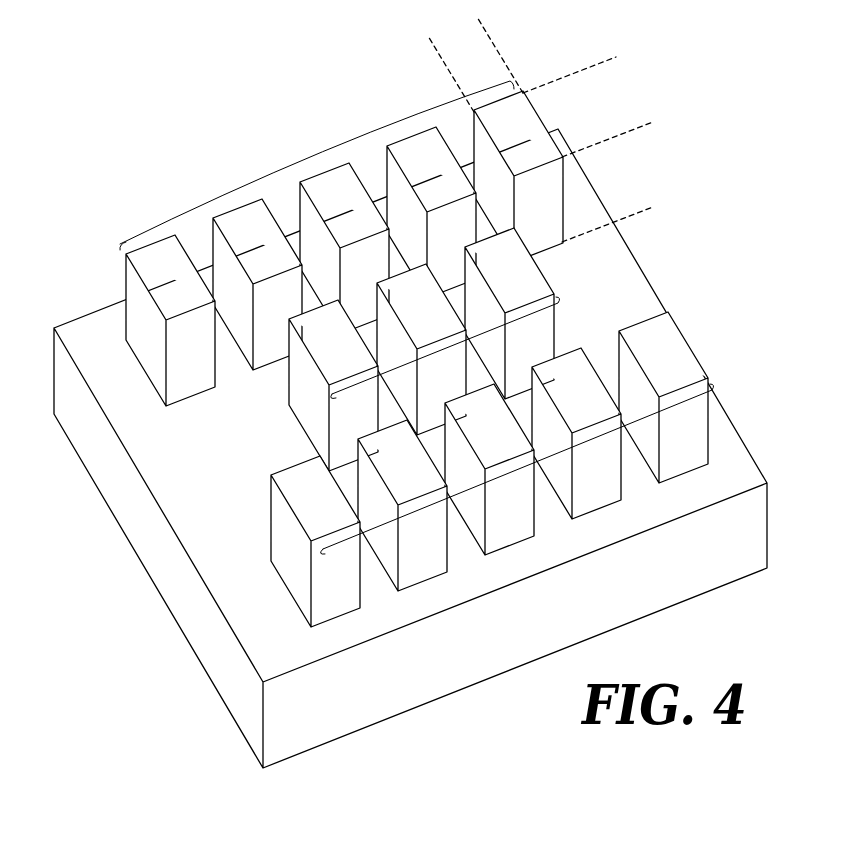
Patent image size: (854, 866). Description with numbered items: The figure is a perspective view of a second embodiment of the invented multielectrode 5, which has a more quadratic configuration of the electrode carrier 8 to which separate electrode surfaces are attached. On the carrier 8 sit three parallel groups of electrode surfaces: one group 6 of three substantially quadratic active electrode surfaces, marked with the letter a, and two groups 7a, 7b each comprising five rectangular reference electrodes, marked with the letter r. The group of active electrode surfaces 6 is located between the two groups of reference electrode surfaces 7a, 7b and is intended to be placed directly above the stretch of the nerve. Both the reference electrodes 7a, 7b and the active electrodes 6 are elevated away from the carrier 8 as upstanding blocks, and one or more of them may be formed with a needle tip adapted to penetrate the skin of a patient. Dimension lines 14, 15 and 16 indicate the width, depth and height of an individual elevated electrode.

The multielectrode 5 is at (404, 424).
The group of active electrode surfaces 6 is at (447, 357).
The group of reference electrodes 7a is at (319, 153).
The group of reference electrodes 7b is at (518, 472).
The electrode carrier 8 is at (143, 537).
The pillar width 14 is at (479, 15).
The pillar depth 15 is at (617, 58).
The pillar height 16 is at (655, 124).